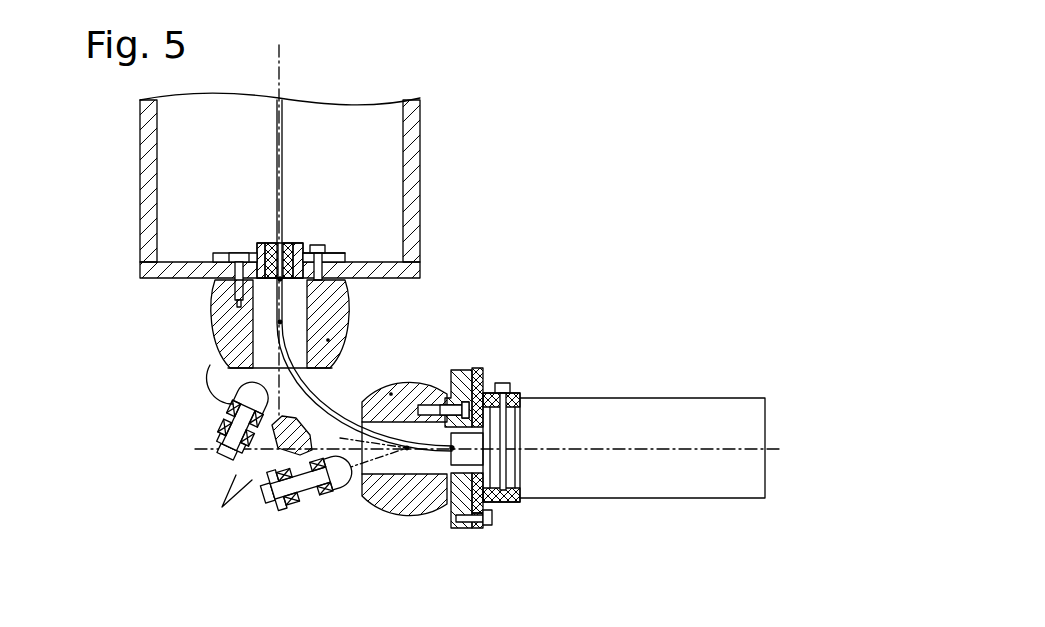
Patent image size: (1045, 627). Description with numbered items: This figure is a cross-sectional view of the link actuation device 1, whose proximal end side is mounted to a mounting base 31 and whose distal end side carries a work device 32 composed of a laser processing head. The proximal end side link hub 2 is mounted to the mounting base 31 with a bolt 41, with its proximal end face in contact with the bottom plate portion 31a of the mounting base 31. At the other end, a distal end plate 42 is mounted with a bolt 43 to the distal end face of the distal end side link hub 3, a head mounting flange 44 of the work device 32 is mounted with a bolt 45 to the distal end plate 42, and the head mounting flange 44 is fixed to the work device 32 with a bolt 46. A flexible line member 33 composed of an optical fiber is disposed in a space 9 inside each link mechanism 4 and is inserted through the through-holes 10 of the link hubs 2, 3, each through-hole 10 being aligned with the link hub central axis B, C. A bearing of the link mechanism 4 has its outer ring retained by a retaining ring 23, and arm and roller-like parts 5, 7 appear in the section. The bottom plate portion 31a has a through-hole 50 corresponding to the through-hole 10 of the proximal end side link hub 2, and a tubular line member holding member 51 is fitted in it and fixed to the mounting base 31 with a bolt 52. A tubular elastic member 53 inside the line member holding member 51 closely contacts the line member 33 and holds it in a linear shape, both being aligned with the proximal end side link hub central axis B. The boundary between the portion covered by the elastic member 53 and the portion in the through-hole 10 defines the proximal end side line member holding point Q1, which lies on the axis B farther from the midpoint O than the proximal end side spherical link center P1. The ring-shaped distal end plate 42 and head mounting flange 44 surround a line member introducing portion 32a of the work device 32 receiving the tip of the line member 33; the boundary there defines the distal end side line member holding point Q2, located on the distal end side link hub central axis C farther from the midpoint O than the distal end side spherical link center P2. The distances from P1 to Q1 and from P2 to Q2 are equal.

The link actuation device 1 is at (139, 398).
The proximal end side link hub 2 is at (214, 314).
The distal end side link hub 3 is at (418, 516).
The link mechanism 4 is at (184, 515).
The arm 5 is at (226, 382).
The first roller 7 is at (229, 418).
The space 9 is at (250, 433).
The through-hole 10 is at (255, 318).
The retaining ring 23 is at (240, 447).
The mounting base 31 is at (421, 152).
The bottom plate portion 31a is at (373, 262).
The work device 32 is at (672, 398).
The line member introducing portion 32a is at (473, 457).
The line member 33 is at (340, 395).
The bolt 41 is at (239, 256).
The distal end plate 42 is at (460, 370).
The bolt 43 is at (478, 369).
The head mounting flange 44 is at (477, 528).
The bolt 45 is at (490, 522).
The bolt 46 is at (505, 385).
The through-hole 50 is at (268, 245).
The line member holding member 51 is at (299, 249).
The bolt 52 is at (330, 253).
The elastic member 53 is at (287, 245).
The midpoint O is at (262, 470).
The proximal end side link hub central axis B is at (328, 340).
The distal end side link hub central axis C is at (391, 394).
The proximal end side spherical link center P1 is at (283, 280).
The distal end side spherical link center P2 is at (450, 447).
The proximal end side line member holding point Q1 is at (262, 284).
The distal end side line member holding point Q2 is at (445, 474).